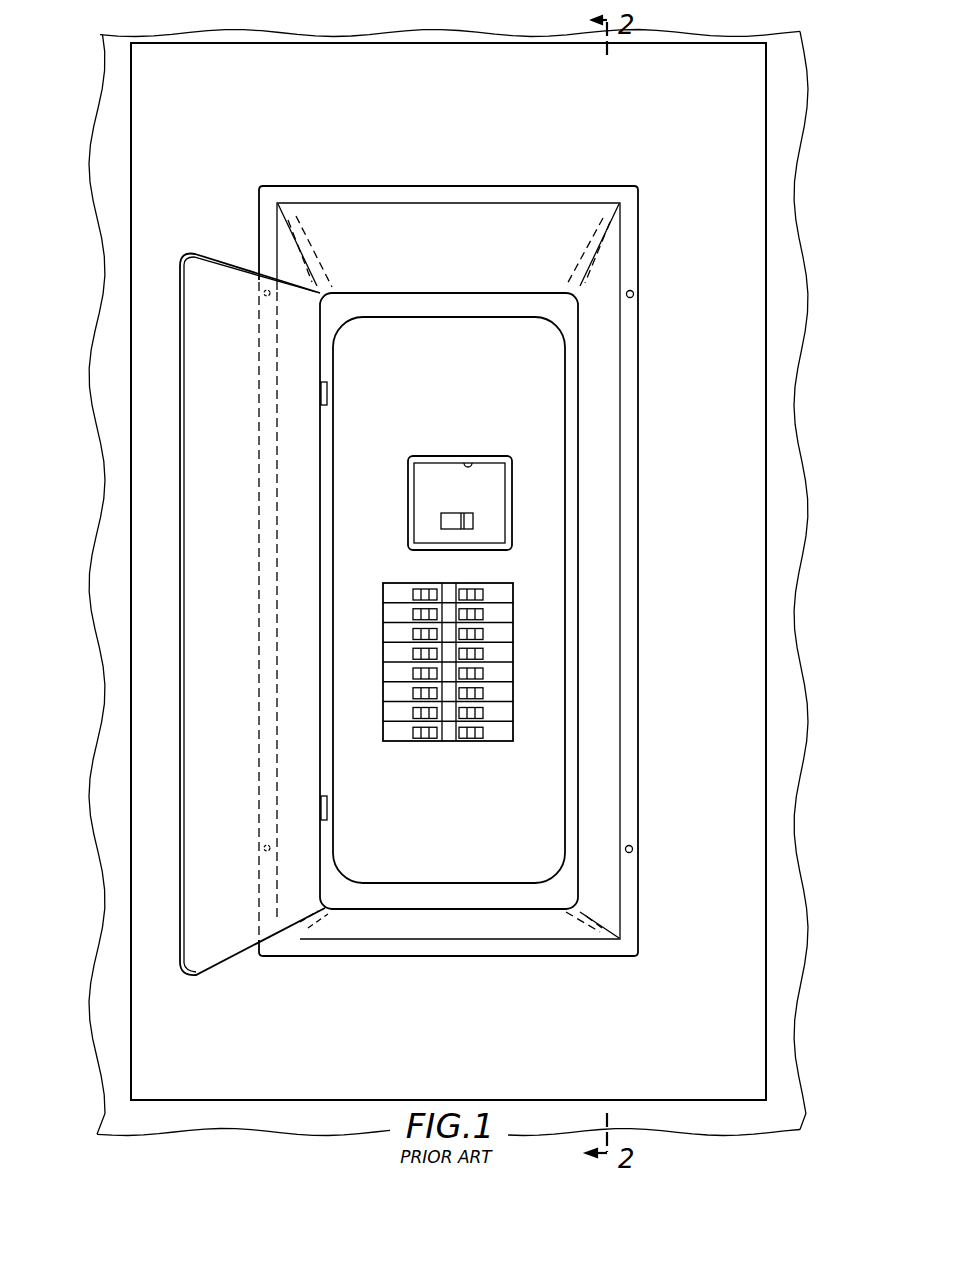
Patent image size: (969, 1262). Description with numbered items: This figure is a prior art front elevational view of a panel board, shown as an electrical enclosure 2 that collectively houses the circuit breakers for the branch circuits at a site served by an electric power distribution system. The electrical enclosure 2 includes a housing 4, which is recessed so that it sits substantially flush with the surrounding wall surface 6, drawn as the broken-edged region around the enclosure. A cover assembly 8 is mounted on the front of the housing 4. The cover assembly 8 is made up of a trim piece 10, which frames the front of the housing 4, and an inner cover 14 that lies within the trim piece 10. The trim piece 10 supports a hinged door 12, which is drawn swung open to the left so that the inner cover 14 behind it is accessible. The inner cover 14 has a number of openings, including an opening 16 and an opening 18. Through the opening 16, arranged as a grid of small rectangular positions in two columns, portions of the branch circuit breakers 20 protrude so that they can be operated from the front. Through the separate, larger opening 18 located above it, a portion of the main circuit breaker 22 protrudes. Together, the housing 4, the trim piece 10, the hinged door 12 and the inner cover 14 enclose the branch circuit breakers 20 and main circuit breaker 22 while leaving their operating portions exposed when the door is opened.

The electrical enclosure 2 is at (710, 108).
The housing 4 is at (434, 192).
The wall surface 6 is at (103, 38).
The cover assembly 8 is at (116, 118).
The trim piece 10 is at (748, 113).
The hinged door 12 is at (224, 273).
The inner cover 14 is at (553, 388).
The opening 16 is at (508, 656).
The opening 18 is at (472, 466).
The branch circuit breakers 20 is at (385, 590).
The main circuit breaker 22 is at (493, 490).